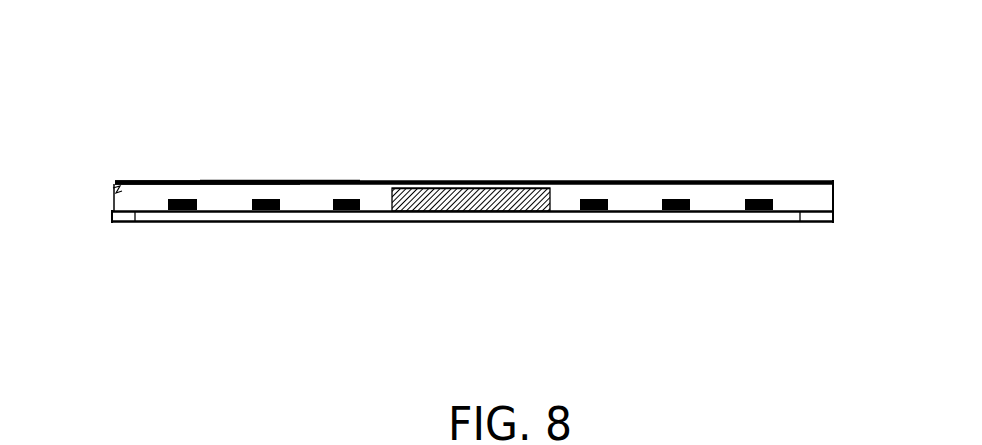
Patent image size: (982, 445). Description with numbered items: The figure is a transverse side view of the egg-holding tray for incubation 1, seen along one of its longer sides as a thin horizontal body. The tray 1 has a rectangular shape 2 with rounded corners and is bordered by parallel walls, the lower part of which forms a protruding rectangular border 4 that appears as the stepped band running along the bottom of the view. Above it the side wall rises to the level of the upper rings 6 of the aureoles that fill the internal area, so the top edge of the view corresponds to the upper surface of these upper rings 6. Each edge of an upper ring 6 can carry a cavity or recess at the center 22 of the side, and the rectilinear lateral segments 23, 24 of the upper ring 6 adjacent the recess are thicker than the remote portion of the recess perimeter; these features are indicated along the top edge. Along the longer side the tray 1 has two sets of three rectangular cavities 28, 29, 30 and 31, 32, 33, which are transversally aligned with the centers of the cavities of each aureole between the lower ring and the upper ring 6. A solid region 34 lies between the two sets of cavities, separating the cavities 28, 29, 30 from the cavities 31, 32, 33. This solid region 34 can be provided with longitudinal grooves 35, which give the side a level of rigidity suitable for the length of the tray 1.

The egg-holding tray for incubation 1 is at (128, 137).
The rectangular shape 2 is at (128, 197).
The protruding rectangular border 4 is at (130, 215).
The upper ring 6 is at (245, 183).
The center of each side 22 is at (224, 183).
The rectilinear lateral segment 23 is at (222, 183).
The rectilinear lateral segment 24 is at (230, 183).
The rectangular cavity 28 is at (188, 207).
The rectangular cavity 29 is at (275, 208).
The rectangular cavity 30 is at (353, 210).
The rectangular cavity 31 is at (597, 207).
The rectangular cavity 32 is at (680, 207).
The rectangular cavity 33 is at (762, 207).
The solid region 34 is at (460, 210).
The longitudinal grooves 35 is at (520, 185).